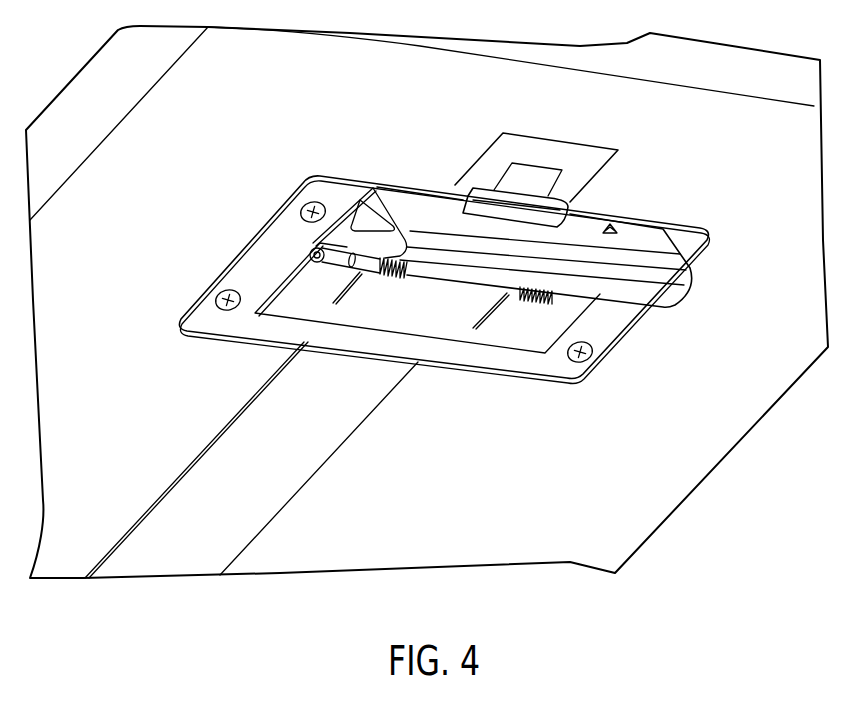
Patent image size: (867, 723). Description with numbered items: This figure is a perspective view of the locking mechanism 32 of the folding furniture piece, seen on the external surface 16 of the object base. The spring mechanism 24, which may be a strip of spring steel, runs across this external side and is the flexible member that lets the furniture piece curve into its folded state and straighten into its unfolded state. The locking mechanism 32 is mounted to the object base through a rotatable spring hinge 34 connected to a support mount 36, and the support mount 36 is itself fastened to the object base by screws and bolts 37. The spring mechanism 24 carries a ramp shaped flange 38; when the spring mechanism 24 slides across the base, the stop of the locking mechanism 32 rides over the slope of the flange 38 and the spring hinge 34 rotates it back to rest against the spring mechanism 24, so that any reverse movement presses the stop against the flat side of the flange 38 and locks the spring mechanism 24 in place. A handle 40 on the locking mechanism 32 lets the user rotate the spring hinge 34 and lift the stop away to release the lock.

The external surface 16 is at (738, 112).
The spring mechanism 24 is at (310, 450).
The locking mechanism 32 is at (302, 157).
The rotatable spring hinge 34 is at (618, 324).
The support mount 36 is at (325, 266).
The screws and bolts 37 is at (302, 206).
The ramp shaped flange 38 is at (532, 182).
The handle 40 is at (678, 282).